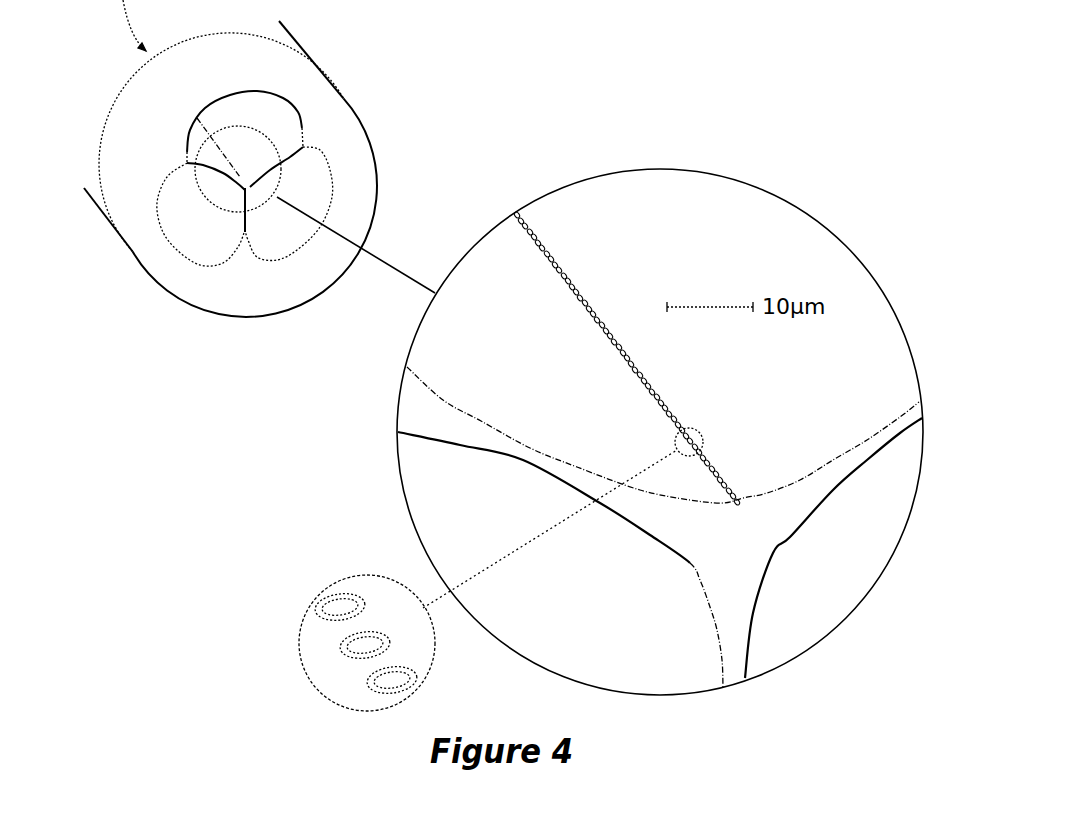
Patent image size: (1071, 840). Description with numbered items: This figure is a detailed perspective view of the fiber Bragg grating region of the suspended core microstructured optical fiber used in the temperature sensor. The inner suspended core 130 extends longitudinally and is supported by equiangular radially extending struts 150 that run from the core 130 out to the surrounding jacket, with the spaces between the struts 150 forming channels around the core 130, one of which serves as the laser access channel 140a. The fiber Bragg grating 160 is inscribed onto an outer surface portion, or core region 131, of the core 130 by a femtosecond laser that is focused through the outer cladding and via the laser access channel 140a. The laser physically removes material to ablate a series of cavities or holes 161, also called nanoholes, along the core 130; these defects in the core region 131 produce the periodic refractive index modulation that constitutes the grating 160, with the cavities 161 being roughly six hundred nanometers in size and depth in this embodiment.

The suspended core 130 is at (738, 548).
The core region 131 is at (719, 428).
The laser access channel 140a is at (687, 260).
The radially extending strut 150 is at (514, 461).
The fiber Bragg grating 160 is at (622, 386).
The cavities or holes 161 is at (335, 600).